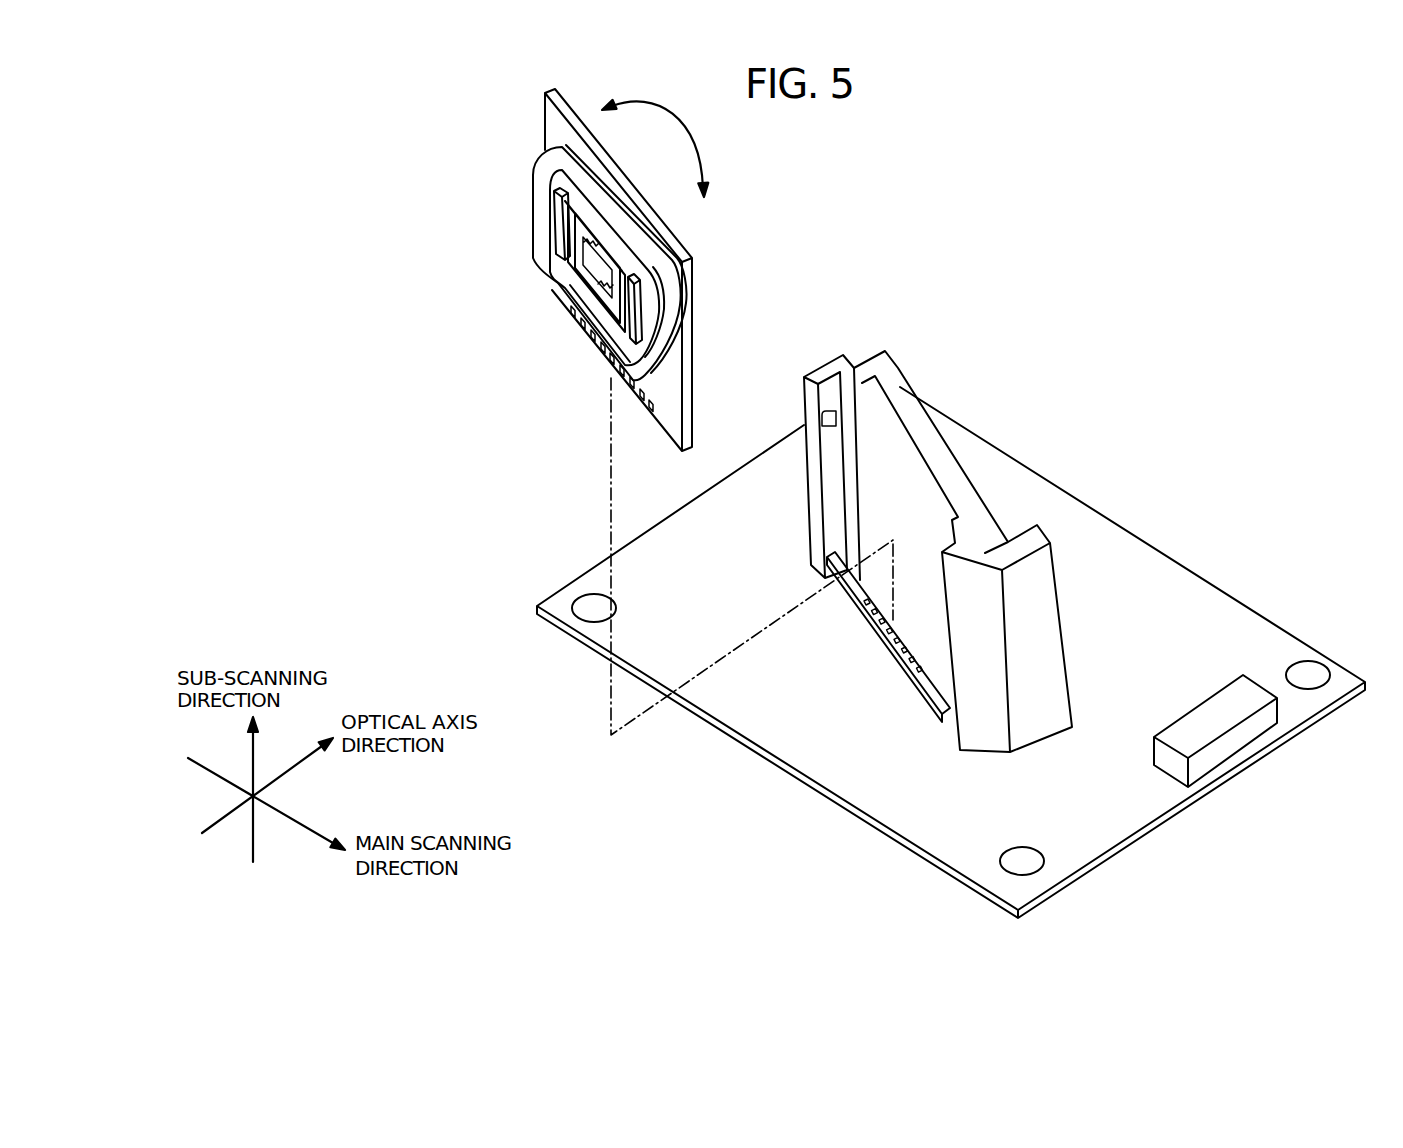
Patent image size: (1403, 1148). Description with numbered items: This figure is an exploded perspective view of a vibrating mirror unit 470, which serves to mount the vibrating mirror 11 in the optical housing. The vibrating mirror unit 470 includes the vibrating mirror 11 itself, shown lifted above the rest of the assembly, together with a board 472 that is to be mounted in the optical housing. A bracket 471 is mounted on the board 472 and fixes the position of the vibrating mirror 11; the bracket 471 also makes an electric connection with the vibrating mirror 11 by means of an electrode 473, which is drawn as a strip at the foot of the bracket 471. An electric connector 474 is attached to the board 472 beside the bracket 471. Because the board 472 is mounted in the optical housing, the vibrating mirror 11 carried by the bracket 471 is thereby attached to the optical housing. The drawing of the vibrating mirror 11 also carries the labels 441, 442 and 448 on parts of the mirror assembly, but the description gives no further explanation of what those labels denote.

The vibrating mirror 11 is at (552, 128).
The light emitting element 441 is at (590, 262).
The lens 442 is at (590, 283).
The electrode terminals 448 is at (672, 418).
The vibrating mirror unit 470 is at (1133, 396).
The bracket 471 is at (907, 475).
The board 472 is at (1203, 603).
The electrode 473 is at (908, 665).
The electric connector 474 is at (1208, 712).